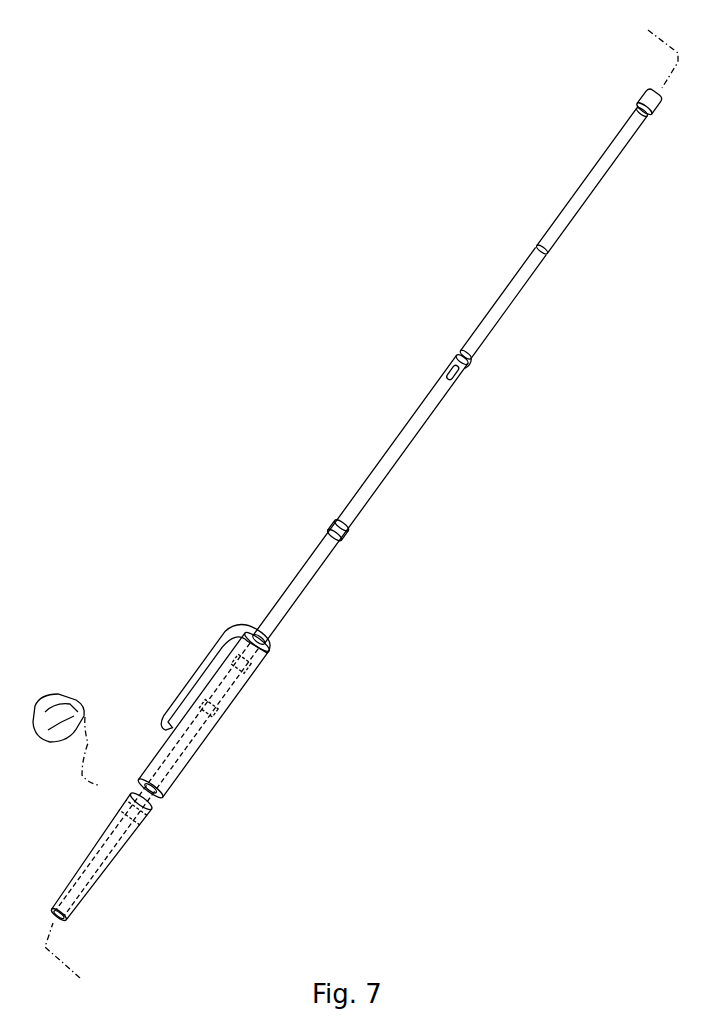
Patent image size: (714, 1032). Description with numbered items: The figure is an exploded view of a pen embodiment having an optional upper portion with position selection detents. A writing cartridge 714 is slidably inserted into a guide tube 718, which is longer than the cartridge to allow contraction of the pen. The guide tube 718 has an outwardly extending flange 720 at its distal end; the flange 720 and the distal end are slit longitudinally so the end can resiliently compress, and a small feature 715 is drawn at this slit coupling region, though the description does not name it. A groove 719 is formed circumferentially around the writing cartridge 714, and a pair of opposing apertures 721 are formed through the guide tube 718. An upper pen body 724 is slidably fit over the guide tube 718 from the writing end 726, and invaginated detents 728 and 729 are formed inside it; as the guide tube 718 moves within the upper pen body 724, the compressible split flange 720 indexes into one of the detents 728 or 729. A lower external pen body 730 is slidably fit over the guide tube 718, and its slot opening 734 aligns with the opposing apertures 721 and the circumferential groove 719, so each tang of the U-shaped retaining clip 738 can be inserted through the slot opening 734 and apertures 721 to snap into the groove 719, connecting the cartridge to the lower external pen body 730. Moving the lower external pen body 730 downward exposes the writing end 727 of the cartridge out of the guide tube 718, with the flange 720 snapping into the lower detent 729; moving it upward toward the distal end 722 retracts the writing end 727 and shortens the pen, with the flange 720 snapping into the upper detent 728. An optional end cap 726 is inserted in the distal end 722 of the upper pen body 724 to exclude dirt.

The writing cartridge 714 is at (567, 208).
The locking slot 715 is at (455, 377).
The guide tube 718 is at (357, 497).
The groove 719 is at (538, 247).
The outwardly extending flange 720 is at (450, 362).
The opposing apertures 721 is at (343, 533).
The distal end 722 is at (648, 30).
The upper pen body 724 is at (173, 780).
The end cap 726 is at (647, 92).
The writing end 727 is at (80, 978).
The upper detent 728 is at (247, 670).
The lower detent 729 is at (218, 715).
The lower external pen body 730 is at (115, 862).
The slot opening 734 is at (127, 807).
The U-shaped retaining clip 738 is at (65, 703).